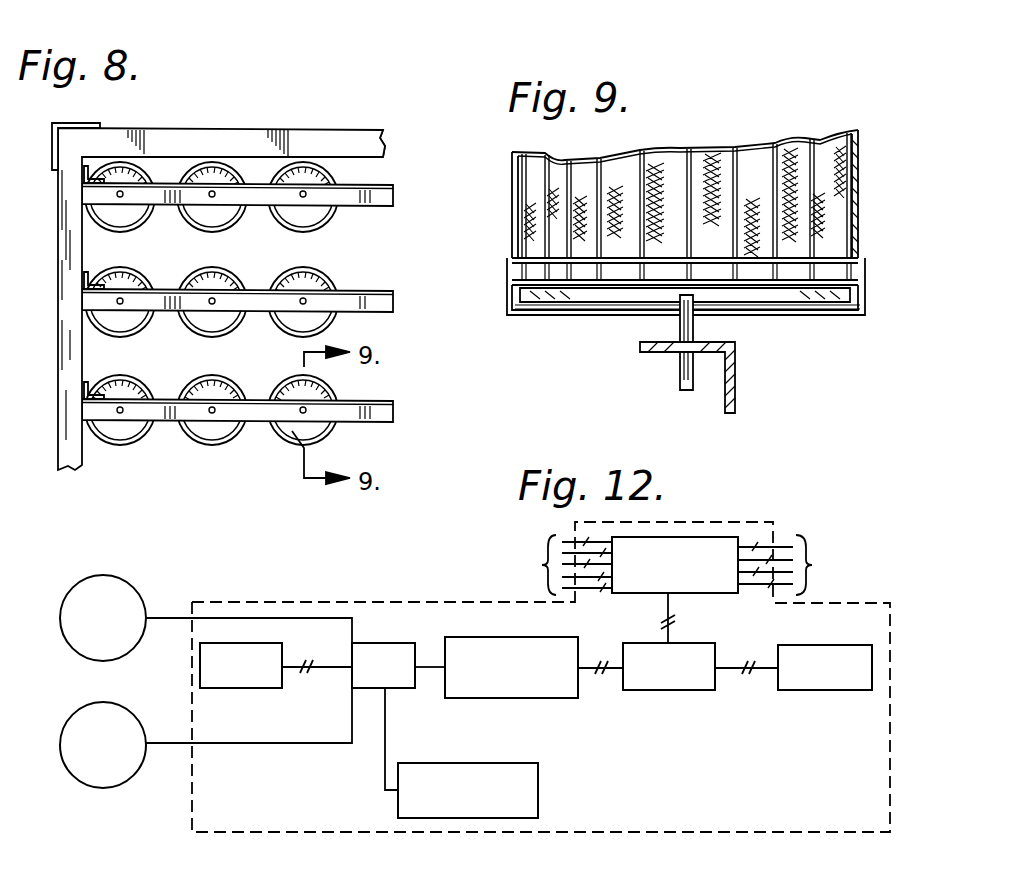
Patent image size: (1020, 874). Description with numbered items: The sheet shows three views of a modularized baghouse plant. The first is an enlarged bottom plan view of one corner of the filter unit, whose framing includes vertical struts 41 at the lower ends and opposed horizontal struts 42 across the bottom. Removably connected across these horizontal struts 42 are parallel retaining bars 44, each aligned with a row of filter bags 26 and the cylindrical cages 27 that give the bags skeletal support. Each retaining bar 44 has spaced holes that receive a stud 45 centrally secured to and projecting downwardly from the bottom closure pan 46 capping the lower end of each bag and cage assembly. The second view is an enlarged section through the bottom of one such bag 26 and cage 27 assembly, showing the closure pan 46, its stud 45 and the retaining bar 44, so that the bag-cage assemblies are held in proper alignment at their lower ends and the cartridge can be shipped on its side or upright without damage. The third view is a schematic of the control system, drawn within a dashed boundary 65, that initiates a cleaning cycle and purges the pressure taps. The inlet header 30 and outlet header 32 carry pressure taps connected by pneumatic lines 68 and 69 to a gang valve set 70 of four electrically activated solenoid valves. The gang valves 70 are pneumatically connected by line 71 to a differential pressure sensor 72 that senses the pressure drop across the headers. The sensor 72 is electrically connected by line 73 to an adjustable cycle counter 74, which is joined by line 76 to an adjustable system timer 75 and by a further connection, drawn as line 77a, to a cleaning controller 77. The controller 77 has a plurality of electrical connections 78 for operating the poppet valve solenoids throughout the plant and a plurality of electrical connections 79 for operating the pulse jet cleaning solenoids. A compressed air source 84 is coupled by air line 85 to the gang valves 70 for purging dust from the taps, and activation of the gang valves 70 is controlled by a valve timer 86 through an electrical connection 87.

In FIG. 8, the filter bag 26 is at (326, 435).
In FIG. 9, the filter bag 26 is at (512, 221).
In FIG. 9, the cylindrical cage 27 is at (540, 243).
In FIG. 8, the vertical strut 41 is at (88, 123).
In FIG. 8, the horizontal strut 42 is at (190, 130).
In FIG. 8, the retaining bar 44 is at (380, 198).
In FIG. 9, the retaining bar 44 is at (737, 400).
In FIG. 8, the stud 45 is at (300, 298).
In FIG. 9, the stud 45 is at (684, 391).
In FIG. 8, the bottom closure pan 46 is at (222, 430).
In FIG. 9, the bottom closure pan 46 is at (620, 292).
In FIG. 12, the inlet header 30 is at (144, 731).
In FIG. 12, the outlet header 32 is at (133, 589).
In FIG. 12, the control system 65 is at (245, 832).
In FIG. 12, the pneumatic line 68 is at (260, 743).
In FIG. 12, the pneumatic line 69 is at (306, 617).
In FIG. 12, the gang valve set 70 is at (395, 643).
In FIG. 12, the pneumatic line 71 is at (430, 666).
In FIG. 12, the differential pressure sensor 72 is at (519, 698).
In FIG. 12, the schematic line 73 is at (596, 671).
In FIG. 12, the adjustable cycle counter 74 is at (705, 690).
In FIG. 12, the adjustable system timer 75 is at (826, 690).
In FIG. 12, the line 76 is at (762, 672).
In FIG. 12, the cleaning controller 77 is at (640, 593).
In FIG. 12, the controller signal line 77a is at (670, 620).
In FIG. 12, the electrical connections 78 is at (600, 540).
In FIG. 12, the electrical connections 79 is at (783, 545).
In FIG. 12, the compressed air source 84 is at (476, 763).
In FIG. 12, the air line 85 is at (385, 723).
In FIG. 12, the valve timer 86 is at (246, 643).
In FIG. 12, the electrical connection 87 is at (313, 660).